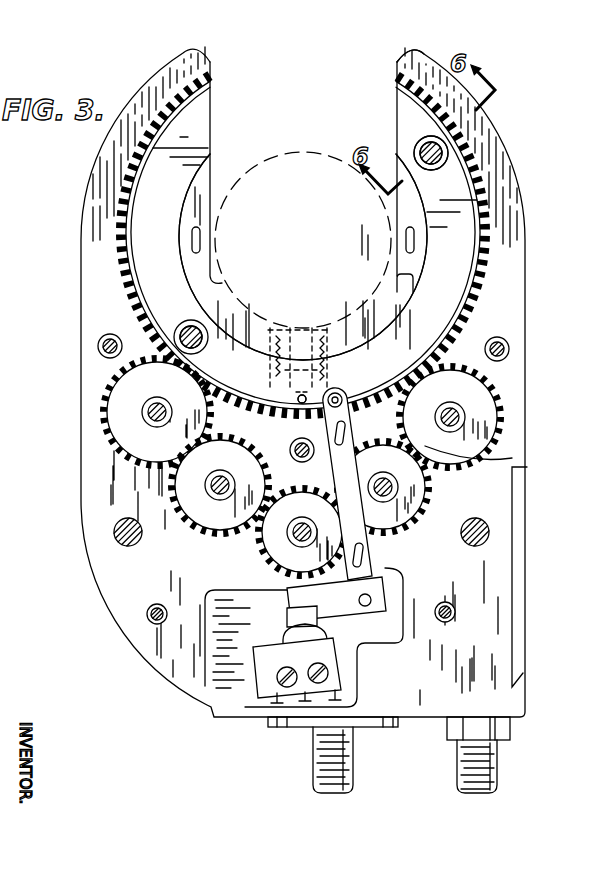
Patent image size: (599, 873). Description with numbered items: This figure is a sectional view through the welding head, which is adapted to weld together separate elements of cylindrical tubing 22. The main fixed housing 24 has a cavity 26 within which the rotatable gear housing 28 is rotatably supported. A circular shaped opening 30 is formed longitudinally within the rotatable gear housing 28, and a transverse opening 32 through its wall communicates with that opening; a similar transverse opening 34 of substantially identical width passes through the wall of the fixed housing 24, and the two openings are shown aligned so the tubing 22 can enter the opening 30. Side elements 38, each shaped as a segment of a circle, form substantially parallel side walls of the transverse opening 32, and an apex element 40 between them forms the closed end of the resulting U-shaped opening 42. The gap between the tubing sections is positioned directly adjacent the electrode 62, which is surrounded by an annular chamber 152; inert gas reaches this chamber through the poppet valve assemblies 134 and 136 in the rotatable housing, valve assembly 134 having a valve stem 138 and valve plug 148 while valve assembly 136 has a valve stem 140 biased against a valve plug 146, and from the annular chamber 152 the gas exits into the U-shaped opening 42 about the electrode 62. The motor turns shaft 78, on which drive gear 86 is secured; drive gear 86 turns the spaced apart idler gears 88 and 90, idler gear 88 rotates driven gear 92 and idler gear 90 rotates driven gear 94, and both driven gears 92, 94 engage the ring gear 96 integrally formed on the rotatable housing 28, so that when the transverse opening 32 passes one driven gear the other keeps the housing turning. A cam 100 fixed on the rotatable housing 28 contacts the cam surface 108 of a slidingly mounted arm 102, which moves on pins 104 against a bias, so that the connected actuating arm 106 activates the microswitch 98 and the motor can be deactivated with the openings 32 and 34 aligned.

The cylindrical tubing 22 is at (279, 180).
The main fixed housing 24 is at (518, 301).
The cavity 26 is at (490, 230).
The rotatable gear housing 28 is at (205, 117).
The circular shaped opening 30 is at (428, 282).
The transverse opening 32 is at (396, 110).
The transverse opening 34 is at (398, 62).
The side elements 38 is at (186, 226).
The apex element 40 is at (207, 287).
The U-shaped opening 42 is at (296, 147).
The electrode 62 is at (272, 342).
The shaft 78 is at (257, 563).
The drive gear 86 is at (283, 590).
The idler gear 88 is at (167, 500).
The idler gear 90 is at (440, 497).
The driven gear 92 is at (133, 433).
The driven gear 94 is at (507, 417).
The ring gear 96 is at (490, 195).
The microswitch 98 is at (277, 660).
The cam 100 is at (334, 393).
The slidingly mounted arm 102 is at (456, 625).
The pins 104 is at (517, 477).
The actuating arm 106 is at (430, 672).
The cam surface 108 is at (468, 455).
The third poppet valve assembly 134 is at (216, 329).
The fourth poppet valve assembly 136 is at (412, 146).
The valve stem 138 is at (178, 323).
The valve stem 140 is at (440, 150).
The valve plug 146 is at (443, 163).
The valve plug 148 is at (174, 331).
The annular chamber 152 is at (314, 283).